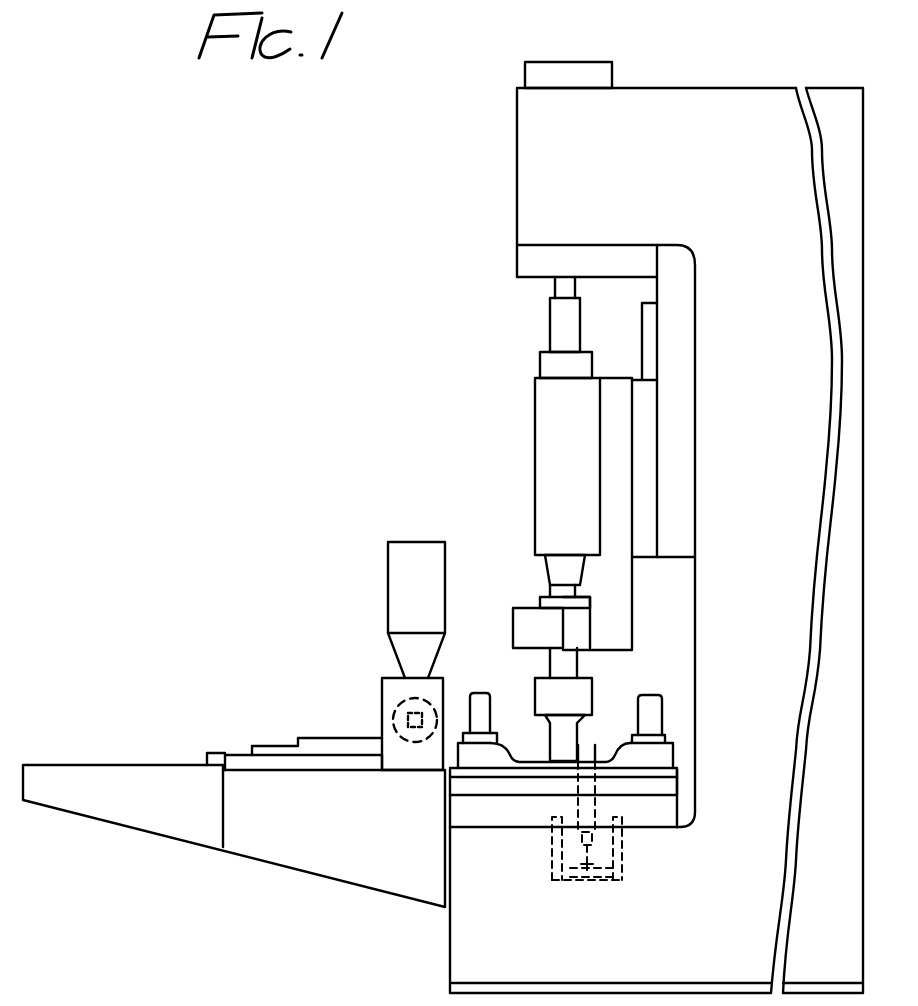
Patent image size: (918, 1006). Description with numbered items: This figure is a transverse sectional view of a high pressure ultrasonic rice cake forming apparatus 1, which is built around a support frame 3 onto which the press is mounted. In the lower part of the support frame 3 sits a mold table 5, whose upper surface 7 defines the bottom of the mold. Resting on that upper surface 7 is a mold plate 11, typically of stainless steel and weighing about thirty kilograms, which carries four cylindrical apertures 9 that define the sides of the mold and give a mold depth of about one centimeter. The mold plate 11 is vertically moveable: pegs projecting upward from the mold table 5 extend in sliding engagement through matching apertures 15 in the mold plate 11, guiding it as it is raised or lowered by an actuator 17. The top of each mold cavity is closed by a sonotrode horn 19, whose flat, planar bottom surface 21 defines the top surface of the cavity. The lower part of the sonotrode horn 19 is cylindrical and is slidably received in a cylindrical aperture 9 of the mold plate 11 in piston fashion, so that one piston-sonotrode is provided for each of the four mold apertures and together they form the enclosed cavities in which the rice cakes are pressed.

The high pressure ultrasonic rice cake forming apparatus 1 is at (770, 78).
The support frame 3 is at (770, 113).
The mold table 5 is at (662, 816).
The upper surface 7 is at (658, 758).
The cylindrical apertures 9 is at (583, 753).
The mold plate 11 is at (682, 757).
The matching apertures 15 is at (457, 745).
The actuator 17 is at (586, 855).
The sonotrode horn 19 is at (592, 682).
The bottom surface 21 is at (562, 768).